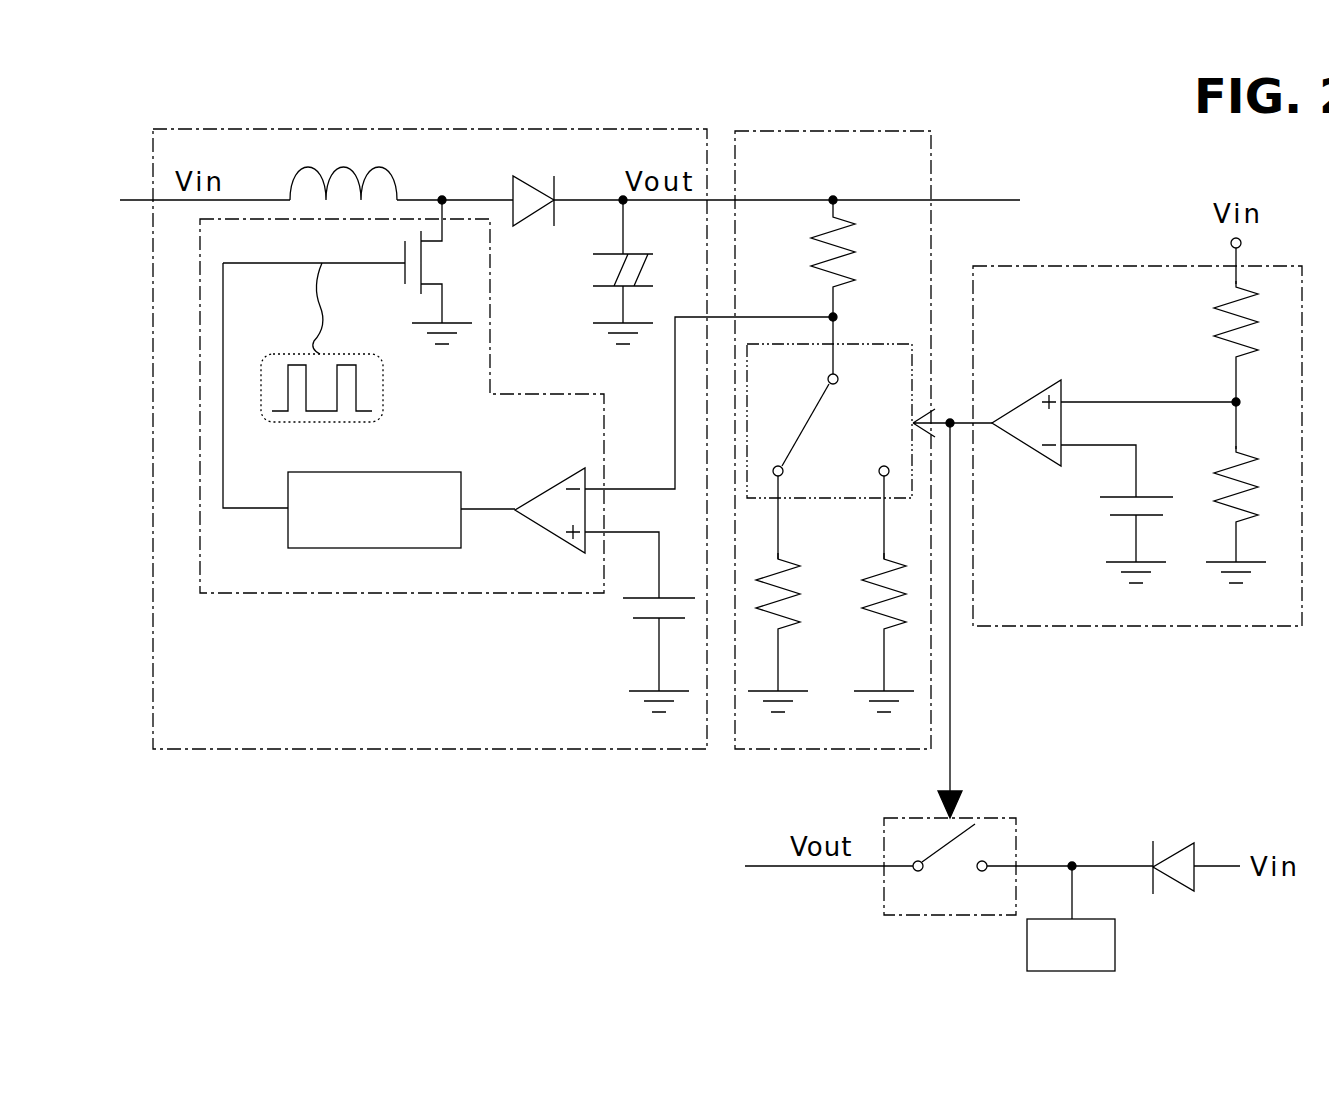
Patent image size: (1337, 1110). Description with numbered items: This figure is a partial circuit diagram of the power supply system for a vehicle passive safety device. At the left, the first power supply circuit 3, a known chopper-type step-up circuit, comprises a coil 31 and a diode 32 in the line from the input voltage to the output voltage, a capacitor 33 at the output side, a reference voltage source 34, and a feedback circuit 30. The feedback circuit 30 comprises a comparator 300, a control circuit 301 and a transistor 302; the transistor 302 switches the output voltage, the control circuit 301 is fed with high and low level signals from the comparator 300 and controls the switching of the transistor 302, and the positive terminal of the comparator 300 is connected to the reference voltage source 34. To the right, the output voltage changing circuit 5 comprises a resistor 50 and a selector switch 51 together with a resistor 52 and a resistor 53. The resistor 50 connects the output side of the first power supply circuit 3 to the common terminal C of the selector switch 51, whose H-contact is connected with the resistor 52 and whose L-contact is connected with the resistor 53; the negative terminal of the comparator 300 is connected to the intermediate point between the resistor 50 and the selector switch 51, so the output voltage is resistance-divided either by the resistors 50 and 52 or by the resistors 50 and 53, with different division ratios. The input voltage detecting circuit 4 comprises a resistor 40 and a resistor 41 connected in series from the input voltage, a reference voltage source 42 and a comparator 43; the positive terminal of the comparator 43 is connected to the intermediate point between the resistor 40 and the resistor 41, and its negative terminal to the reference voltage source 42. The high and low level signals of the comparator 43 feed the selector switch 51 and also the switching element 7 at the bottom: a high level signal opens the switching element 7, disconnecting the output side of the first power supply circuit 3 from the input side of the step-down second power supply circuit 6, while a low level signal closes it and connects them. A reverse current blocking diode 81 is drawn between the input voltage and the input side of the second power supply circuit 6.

The first power supply circuit 3 is at (378, 128).
The feedback circuit 30 is at (270, 592).
The coil 31 is at (306, 170).
The diode 32 is at (533, 183).
The capacitor 33 is at (636, 253).
The reference voltage source 34 is at (675, 597).
The comparator 300 is at (552, 482).
The control circuit 301 is at (375, 547).
The transistor 302 is at (405, 250).
The input voltage detecting circuit 4 is at (1228, 625).
The resistor 40 is at (1220, 297).
The resistor 41 is at (1245, 458).
The reference voltage source 42 is at (1152, 496).
The comparator 43 is at (1027, 392).
The output voltage changing circuit 5 is at (931, 158).
The resistor 50 is at (818, 237).
The selector switch 51 is at (860, 343).
The resistor 52 is at (878, 628).
The resistor 53 is at (785, 558).
The second power supply circuit 6 is at (1071, 918).
The switching element 7 is at (920, 817).
The reverse current blocking diode 81 is at (1178, 886).